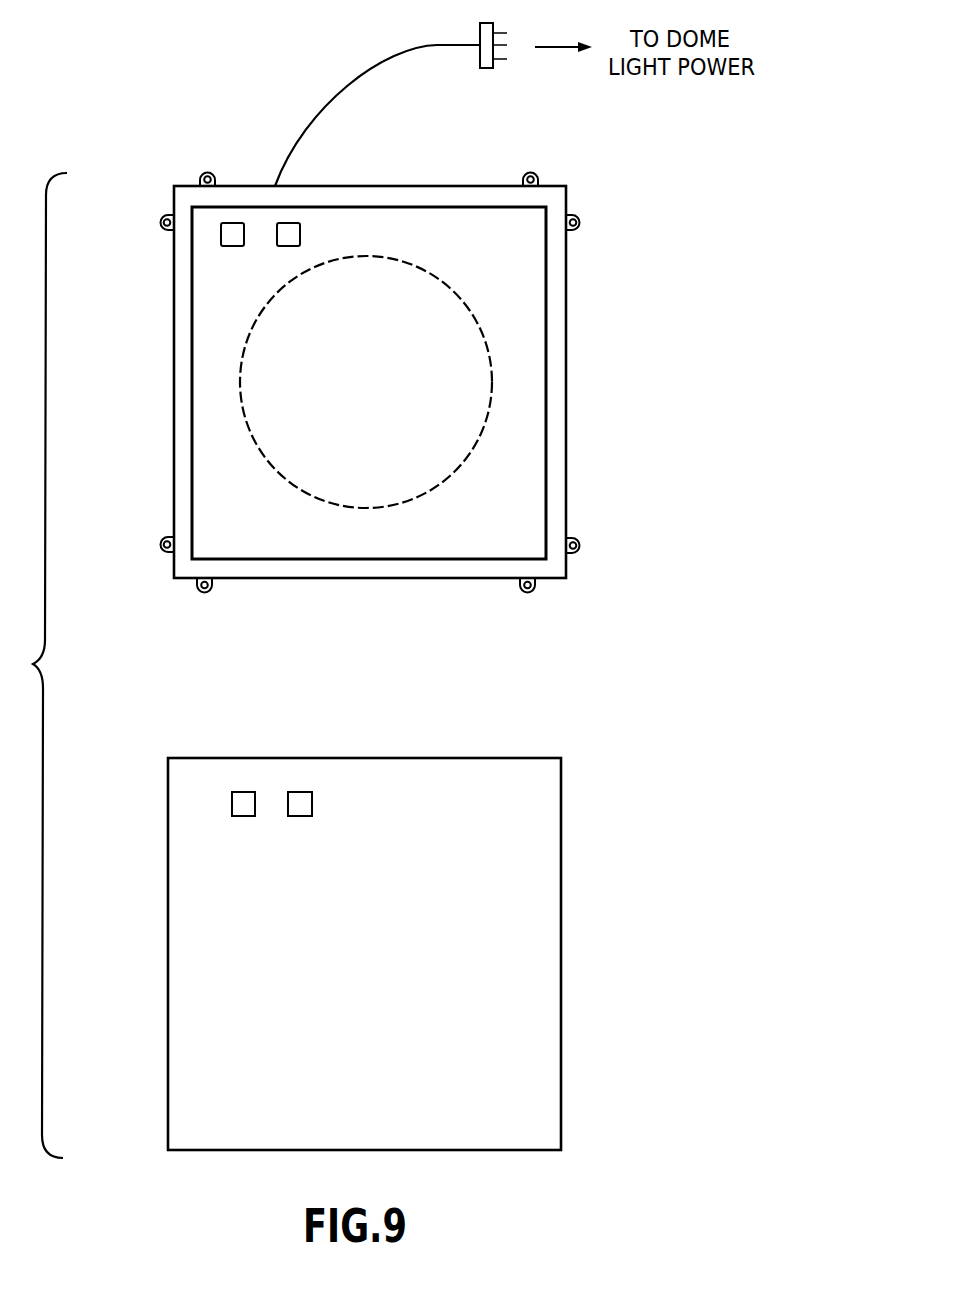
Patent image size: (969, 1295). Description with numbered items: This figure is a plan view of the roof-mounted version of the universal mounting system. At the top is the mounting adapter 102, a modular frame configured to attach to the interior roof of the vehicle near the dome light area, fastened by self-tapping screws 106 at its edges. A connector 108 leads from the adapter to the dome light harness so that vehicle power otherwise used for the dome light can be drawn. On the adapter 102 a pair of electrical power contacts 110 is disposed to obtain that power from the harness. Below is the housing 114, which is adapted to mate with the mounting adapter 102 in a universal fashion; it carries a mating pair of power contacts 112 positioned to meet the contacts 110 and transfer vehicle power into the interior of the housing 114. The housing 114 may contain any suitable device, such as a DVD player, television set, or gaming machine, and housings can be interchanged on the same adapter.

The mounting adapter 102 is at (566, 315).
The self-tapping screws 106 is at (577, 549).
The connector 108 is at (488, 68).
The electrical power contacts 110 is at (288, 228).
The power contacts 112 is at (300, 797).
The housing 114 is at (457, 758).